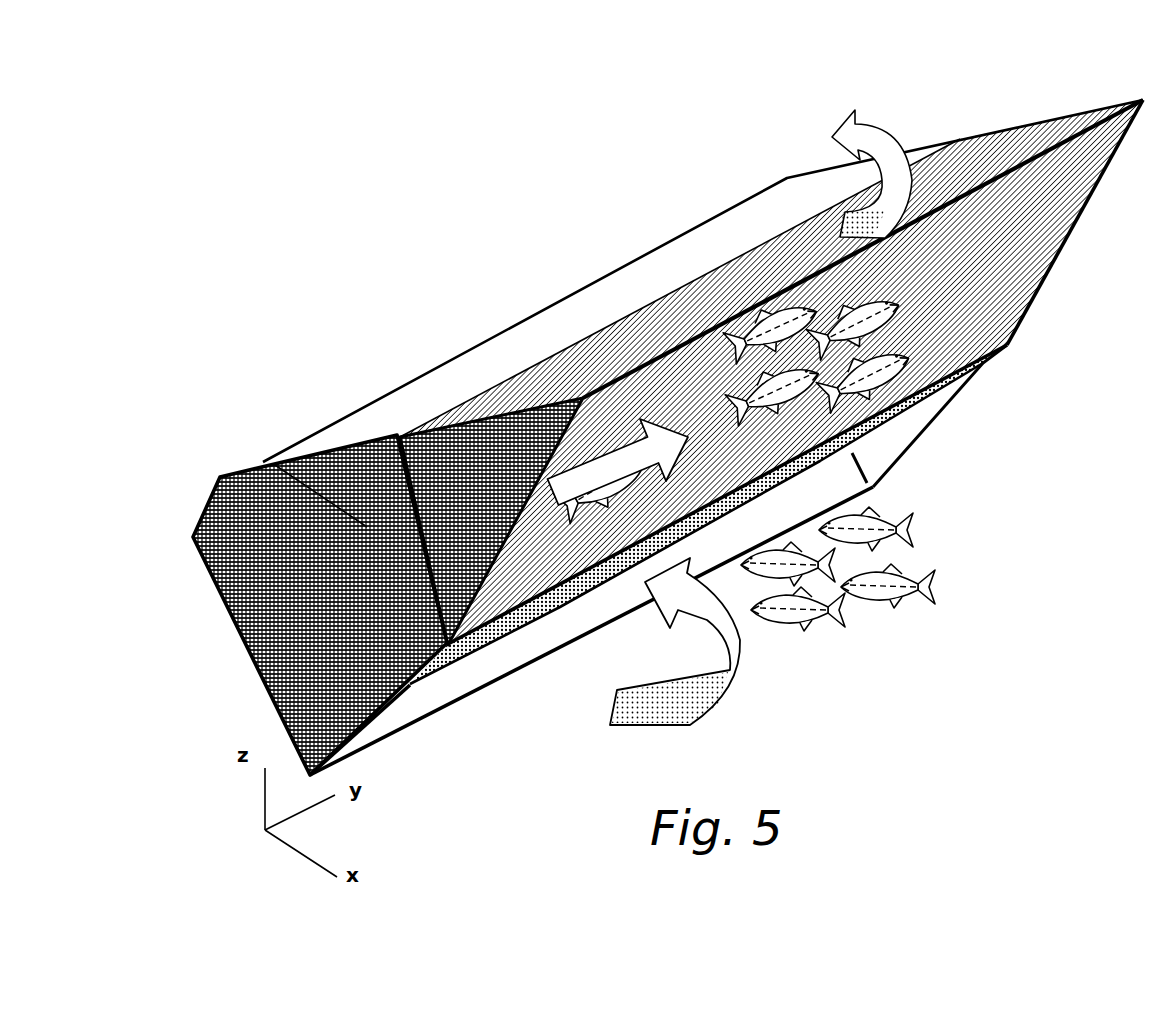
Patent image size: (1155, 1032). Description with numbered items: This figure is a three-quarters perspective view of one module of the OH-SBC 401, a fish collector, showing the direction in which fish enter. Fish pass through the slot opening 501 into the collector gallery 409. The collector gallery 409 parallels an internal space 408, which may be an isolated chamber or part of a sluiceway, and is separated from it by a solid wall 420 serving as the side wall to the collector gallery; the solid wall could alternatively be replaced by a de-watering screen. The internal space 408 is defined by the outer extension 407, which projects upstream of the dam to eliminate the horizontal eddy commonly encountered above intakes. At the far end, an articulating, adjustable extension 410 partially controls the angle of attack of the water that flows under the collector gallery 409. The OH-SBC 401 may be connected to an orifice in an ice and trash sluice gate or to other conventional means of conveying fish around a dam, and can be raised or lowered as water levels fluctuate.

The OH-SBC 401 is at (668, 410).
The extension 407 is at (1118, 108).
The internal space 408 is at (530, 388).
The collector gallery 409 is at (593, 302).
The articulating extension 410 is at (990, 373).
The solid wall 420 is at (457, 468).
The slot opening 501 is at (488, 667).